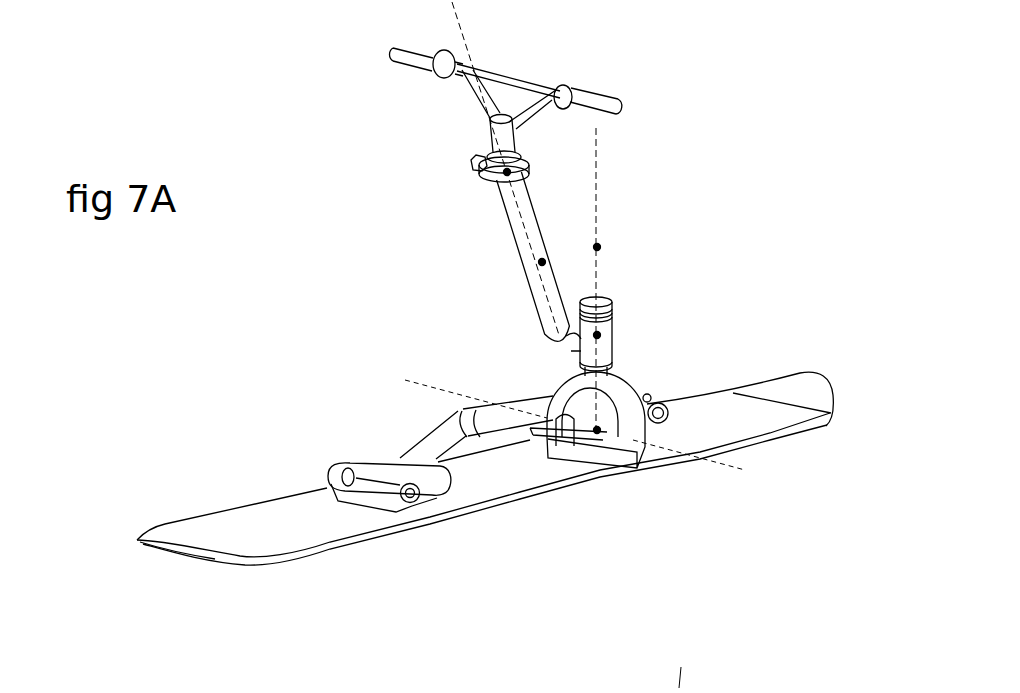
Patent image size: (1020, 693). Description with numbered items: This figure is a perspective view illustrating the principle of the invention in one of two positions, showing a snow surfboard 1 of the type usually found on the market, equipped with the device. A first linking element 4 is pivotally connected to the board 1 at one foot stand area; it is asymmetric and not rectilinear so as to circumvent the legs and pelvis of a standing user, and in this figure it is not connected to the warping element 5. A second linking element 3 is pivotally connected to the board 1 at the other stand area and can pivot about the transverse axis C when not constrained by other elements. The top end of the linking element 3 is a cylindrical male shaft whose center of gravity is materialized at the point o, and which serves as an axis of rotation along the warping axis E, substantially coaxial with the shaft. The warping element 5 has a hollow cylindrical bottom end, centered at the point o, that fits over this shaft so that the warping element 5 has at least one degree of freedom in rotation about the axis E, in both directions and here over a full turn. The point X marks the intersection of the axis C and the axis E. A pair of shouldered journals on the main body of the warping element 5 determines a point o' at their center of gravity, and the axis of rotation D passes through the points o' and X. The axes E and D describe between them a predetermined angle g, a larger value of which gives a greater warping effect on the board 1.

The snow surfboard 1 is at (254, 518).
The second linking element 3 is at (633, 370).
The first linking element 4 is at (396, 441).
The warping element 5 is at (507, 244).
The transverse axis C is at (397, 376).
The axis of rotation D is at (476, 31).
The warping axis E is at (607, 190).
The angle g is at (604, 241).
The point o is at (669, 311).
The point o' is at (416, 185).
The point X is at (596, 434).